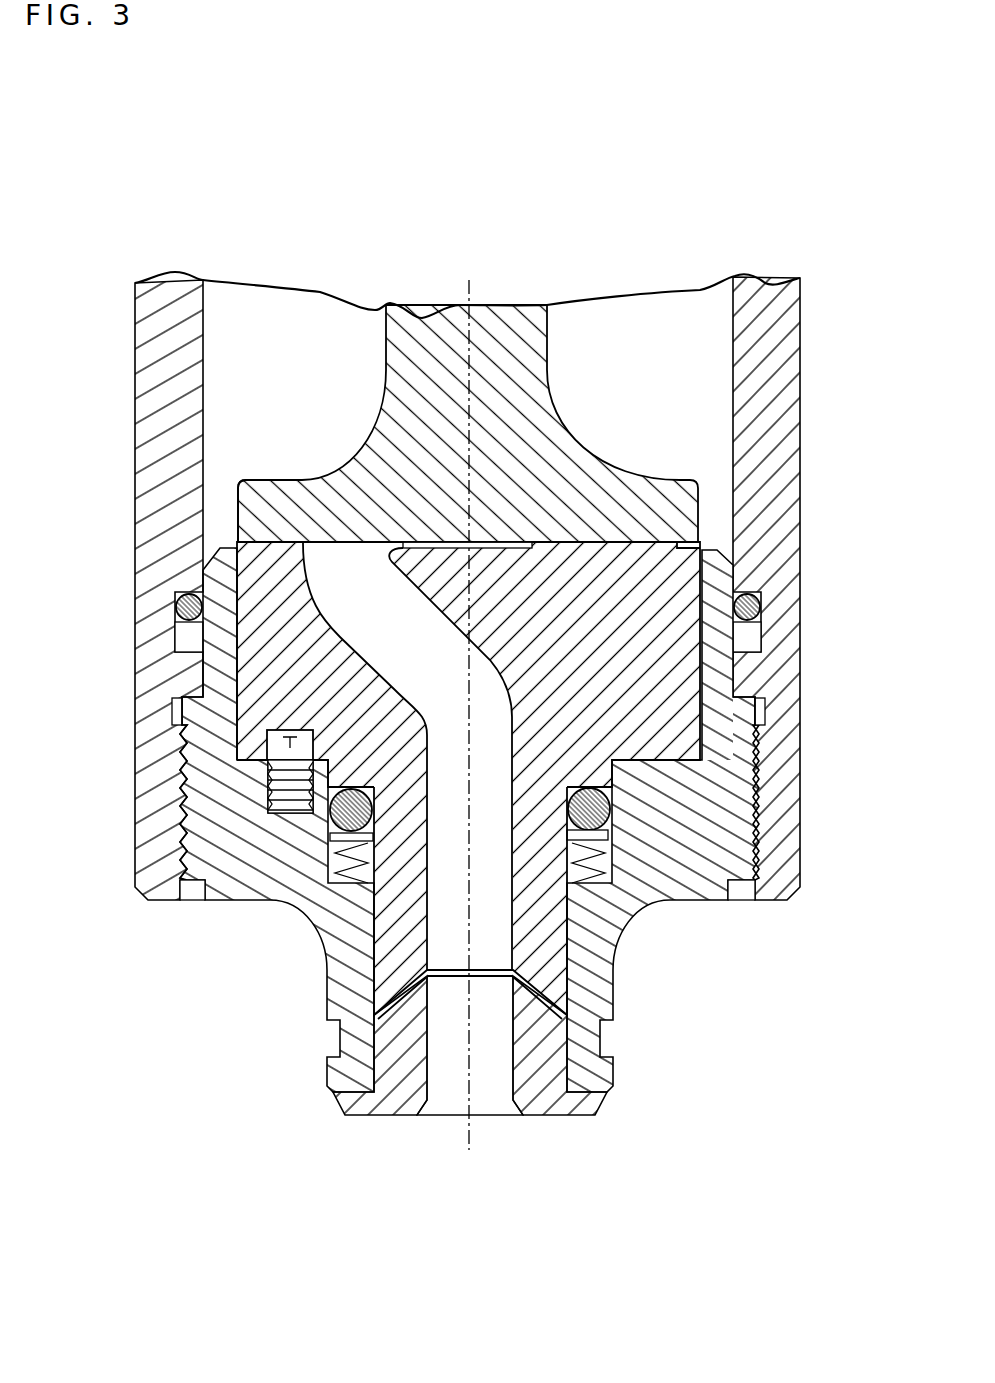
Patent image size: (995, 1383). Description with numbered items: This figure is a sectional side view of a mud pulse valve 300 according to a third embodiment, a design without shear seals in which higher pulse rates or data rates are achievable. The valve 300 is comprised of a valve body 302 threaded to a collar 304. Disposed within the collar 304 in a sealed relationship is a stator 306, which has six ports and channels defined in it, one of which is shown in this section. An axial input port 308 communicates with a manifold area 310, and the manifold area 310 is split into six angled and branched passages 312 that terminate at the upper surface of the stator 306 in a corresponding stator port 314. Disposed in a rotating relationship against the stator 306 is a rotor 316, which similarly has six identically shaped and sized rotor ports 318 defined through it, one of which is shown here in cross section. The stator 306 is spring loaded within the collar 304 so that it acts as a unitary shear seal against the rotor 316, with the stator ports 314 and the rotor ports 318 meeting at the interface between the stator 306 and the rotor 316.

The valve 300 is at (767, 137).
The valve body 302 is at (791, 381).
The collar 304 is at (686, 878).
The stator 306 is at (683, 581).
The axial input port 308 is at (456, 1114).
The manifold area 310 is at (459, 942).
The angled and branched passages 312 is at (375, 637).
The stator port 314 is at (310, 528).
The rotor 316 is at (419, 323).
The rotor ports 318 is at (305, 492).